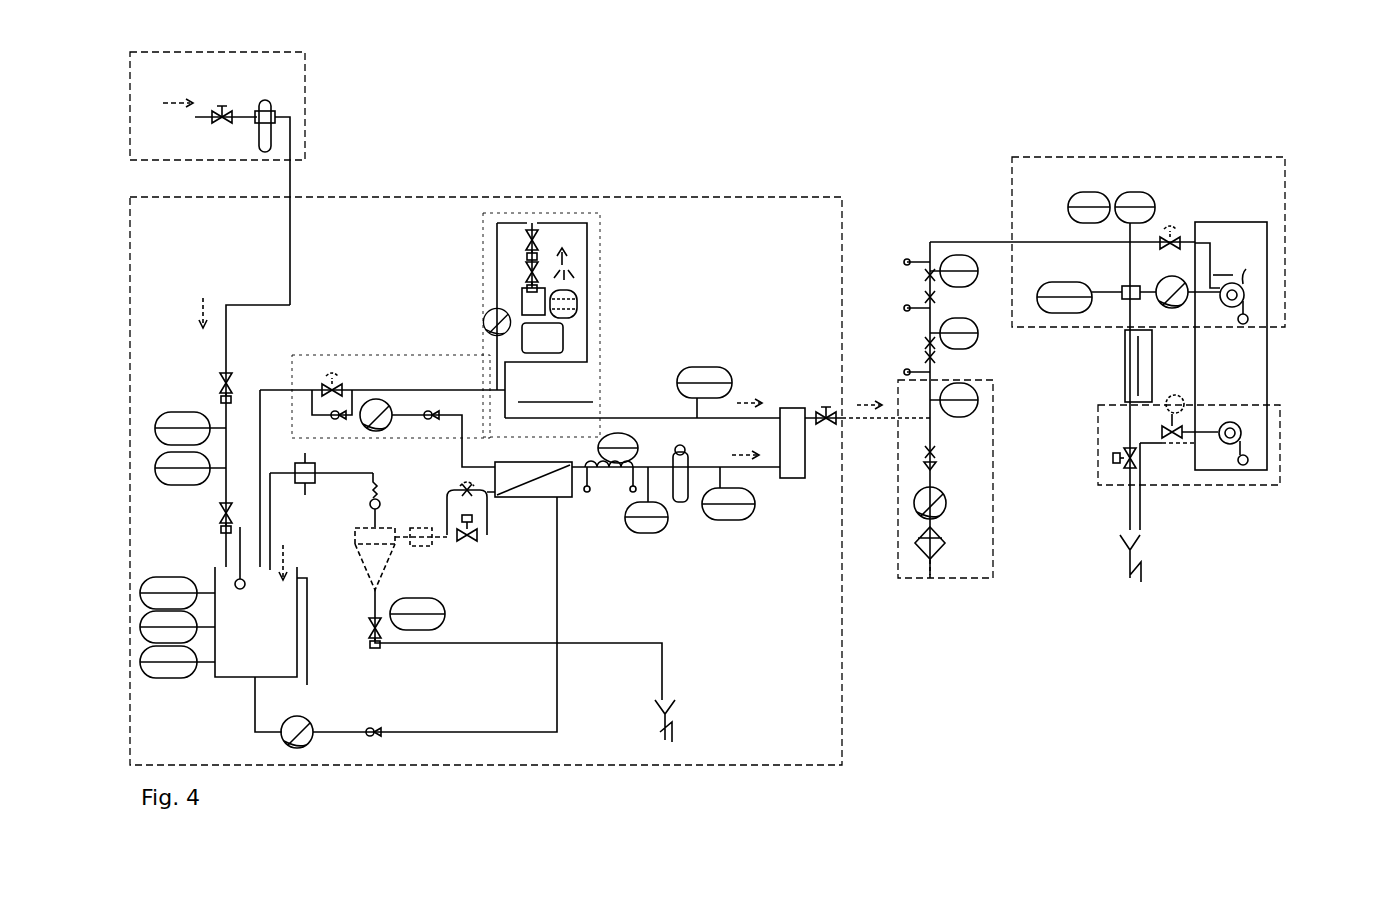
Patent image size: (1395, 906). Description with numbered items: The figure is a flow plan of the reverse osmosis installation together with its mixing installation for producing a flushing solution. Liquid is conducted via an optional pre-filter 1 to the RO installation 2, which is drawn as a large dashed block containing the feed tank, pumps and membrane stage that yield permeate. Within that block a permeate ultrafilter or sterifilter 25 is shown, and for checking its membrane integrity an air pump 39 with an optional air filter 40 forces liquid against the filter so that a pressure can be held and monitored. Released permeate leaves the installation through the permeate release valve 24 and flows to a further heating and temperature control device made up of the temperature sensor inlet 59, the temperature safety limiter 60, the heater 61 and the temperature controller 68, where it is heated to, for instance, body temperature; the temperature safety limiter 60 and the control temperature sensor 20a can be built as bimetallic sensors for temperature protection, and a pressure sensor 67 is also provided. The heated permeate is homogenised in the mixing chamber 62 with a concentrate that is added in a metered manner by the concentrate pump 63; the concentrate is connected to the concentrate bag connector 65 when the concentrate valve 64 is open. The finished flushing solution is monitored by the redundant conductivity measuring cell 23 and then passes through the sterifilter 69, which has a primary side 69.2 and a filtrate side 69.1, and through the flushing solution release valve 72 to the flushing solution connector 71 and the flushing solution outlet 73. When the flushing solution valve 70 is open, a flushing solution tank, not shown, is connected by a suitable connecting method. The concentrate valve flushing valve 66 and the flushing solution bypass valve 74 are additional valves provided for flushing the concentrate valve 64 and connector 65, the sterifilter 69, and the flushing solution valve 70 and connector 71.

The pre-filter 1 is at (308, 125).
The RO installation 2 is at (548, 192).
The control temperature sensor 20a is at (622, 435).
The redundant conductivity measuring cell and temperature indicator 23 is at (1067, 315).
The permeate release valve 24 is at (824, 402).
The permeate ultrafilter/sterifilter 25 is at (790, 482).
The air pump 39 is at (947, 505).
The air filter 40 is at (928, 580).
The temperature sensor inlet 59 is at (970, 410).
The temperature safety limiter 60 is at (968, 286).
The heater No. 2 61 is at (915, 298).
The mixing chamber 62 is at (1123, 286).
The concentrate pump 63 is at (1173, 311).
The concentrate valve 64 is at (1247, 288).
The concentrate bag connector with monitor 65 is at (1243, 277).
The concentrate valve flushing valve 66 is at (1178, 233).
The pressure sensor 67 is at (1133, 192).
The temperature controller 68 is at (1078, 192).
The sterifilter 69 is at (1163, 377).
The filtrate side 69.1 is at (1195, 370).
The primary side 69.2 is at (1122, 370).
The flushing solution valve 70 is at (1255, 455).
The flushing solution connector with monitor 71 is at (1233, 413).
The flushing solution release valve 72 is at (1190, 413).
The flushing solution outlet 73 is at (1142, 505).
The flushing solution bypass valve 74 is at (1117, 460).